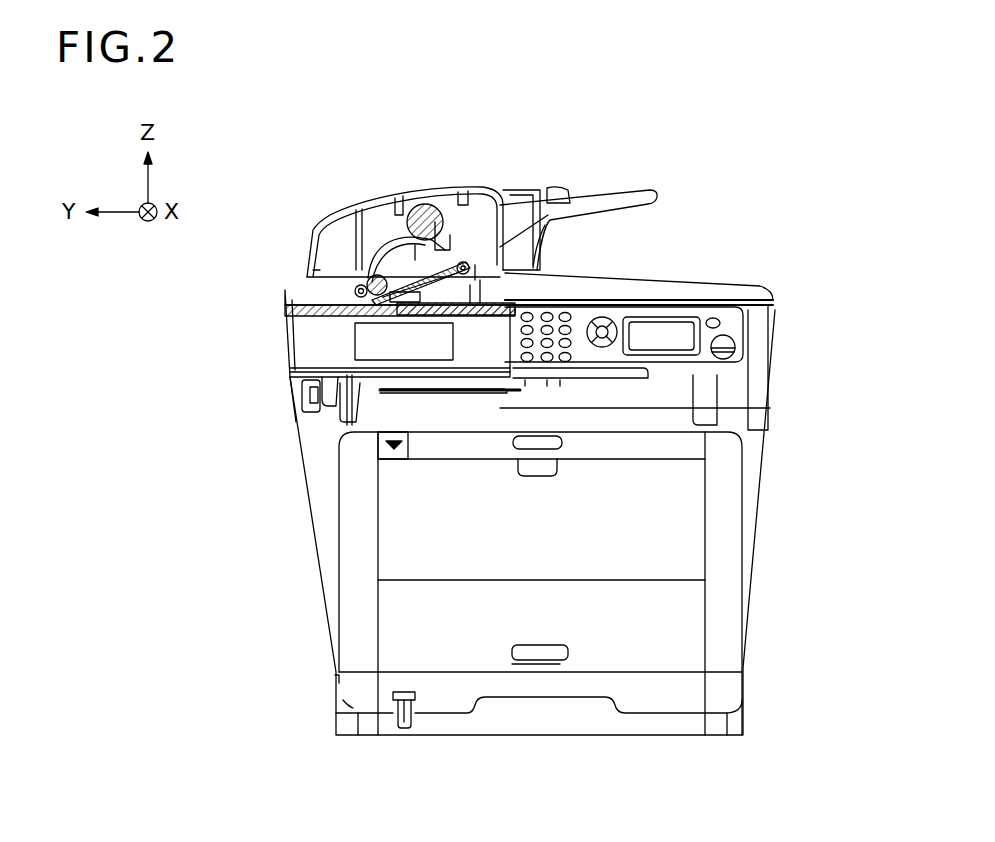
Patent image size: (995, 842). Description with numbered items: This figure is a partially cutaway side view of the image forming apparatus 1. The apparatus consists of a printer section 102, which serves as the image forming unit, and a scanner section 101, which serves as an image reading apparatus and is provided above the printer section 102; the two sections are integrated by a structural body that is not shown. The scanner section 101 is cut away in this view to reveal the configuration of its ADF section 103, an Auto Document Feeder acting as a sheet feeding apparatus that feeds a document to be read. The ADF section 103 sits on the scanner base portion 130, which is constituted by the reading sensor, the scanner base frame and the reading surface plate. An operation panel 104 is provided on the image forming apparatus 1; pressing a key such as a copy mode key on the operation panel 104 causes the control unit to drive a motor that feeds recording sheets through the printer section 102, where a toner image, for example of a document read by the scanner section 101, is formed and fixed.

The image forming apparatus 1 is at (695, 178).
The scanner section 101 is at (718, 258).
The printer section 102 is at (298, 598).
The ADF section 103 is at (393, 188).
The operation panel 104 is at (730, 328).
The scanner base portion 130 is at (283, 343).